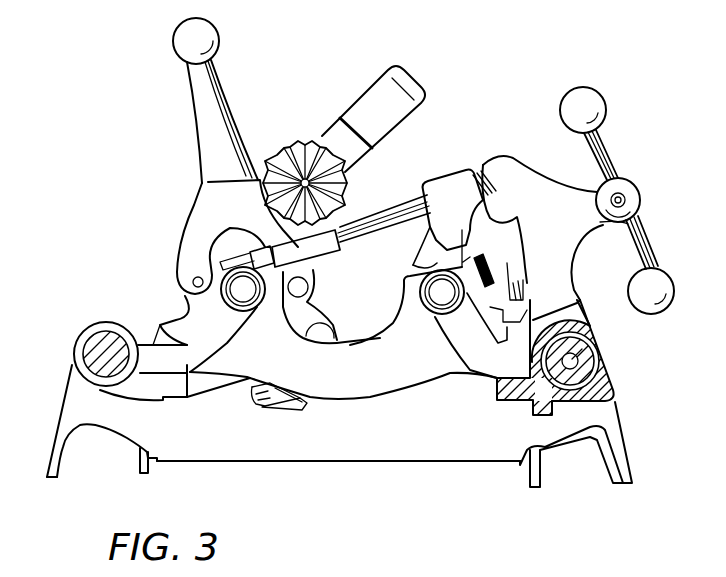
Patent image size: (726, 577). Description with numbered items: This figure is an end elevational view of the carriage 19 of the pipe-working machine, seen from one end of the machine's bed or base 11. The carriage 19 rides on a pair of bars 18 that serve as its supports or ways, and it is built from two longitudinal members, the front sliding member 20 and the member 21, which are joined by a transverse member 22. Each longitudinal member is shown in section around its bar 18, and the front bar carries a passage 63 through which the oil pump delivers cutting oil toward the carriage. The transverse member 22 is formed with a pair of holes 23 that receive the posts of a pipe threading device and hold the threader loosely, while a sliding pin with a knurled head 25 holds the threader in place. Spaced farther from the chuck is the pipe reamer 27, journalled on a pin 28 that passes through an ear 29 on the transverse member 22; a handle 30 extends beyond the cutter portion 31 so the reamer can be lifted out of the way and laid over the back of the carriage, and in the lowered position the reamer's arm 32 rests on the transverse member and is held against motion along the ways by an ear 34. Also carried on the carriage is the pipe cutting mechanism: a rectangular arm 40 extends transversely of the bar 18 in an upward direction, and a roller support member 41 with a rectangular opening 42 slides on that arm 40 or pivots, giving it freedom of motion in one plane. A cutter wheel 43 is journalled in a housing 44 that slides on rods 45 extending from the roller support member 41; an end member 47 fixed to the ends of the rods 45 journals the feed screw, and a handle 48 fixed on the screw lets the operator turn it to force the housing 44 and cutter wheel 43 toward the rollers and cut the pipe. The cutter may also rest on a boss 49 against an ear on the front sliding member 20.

The bed or base 11 is at (538, 453).
The bars 18 is at (100, 354).
The carriage 19 is at (407, 415).
The front sliding member 20 is at (592, 337).
The carriage member 21 is at (92, 323).
The transverse member 22 is at (356, 384).
The holes 23 is at (247, 306).
The knurled head 25 is at (470, 262).
The pipe reamer 27 is at (290, 125).
The pin 28 is at (193, 282).
The ear 29 is at (194, 312).
The handle 30 is at (200, 81).
The cutter portion 31 is at (309, 148).
The arm 32 is at (378, 92).
The ear 34 is at (461, 257).
The rectangular arm 40 is at (155, 342).
The roller support member 41 is at (213, 382).
The rectangular opening 42 is at (332, 325).
The cutter wheel 43 is at (405, 260).
The housing 44 is at (442, 200).
The rods 45 is at (374, 226).
The end member 47 is at (542, 193).
The handle 48 is at (622, 185).
The boss 49 is at (570, 315).
The passage 63 is at (583, 365).